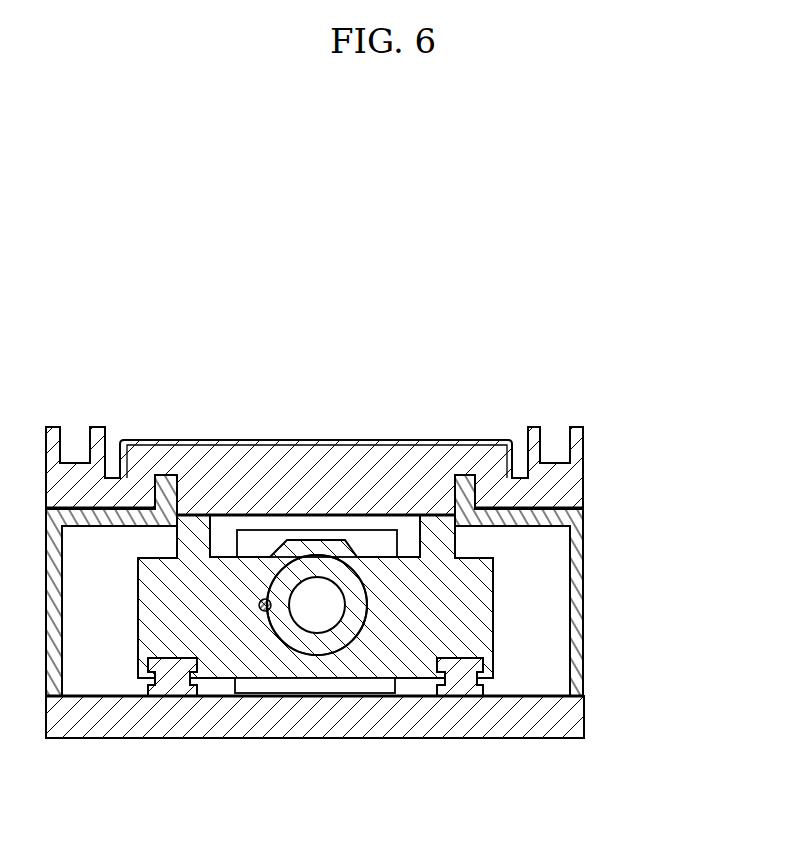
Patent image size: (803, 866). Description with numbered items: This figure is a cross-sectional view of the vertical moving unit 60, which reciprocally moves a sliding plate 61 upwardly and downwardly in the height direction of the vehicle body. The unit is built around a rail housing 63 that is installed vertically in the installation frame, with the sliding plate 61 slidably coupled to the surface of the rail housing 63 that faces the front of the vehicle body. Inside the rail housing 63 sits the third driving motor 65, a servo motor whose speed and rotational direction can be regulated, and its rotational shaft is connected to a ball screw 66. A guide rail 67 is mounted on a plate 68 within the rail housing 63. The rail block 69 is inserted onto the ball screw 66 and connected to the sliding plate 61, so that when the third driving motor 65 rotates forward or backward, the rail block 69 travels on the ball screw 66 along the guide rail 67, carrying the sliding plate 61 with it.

The vertical moving unit 60 is at (437, 375).
The sliding plate 61 is at (557, 481).
The rail housing 63 is at (578, 560).
The third driving motor 65 is at (368, 538).
The ball screw 66 is at (305, 565).
The guide rail 67 is at (458, 683).
The plate 68 is at (530, 725).
The rail block 69 is at (218, 655).